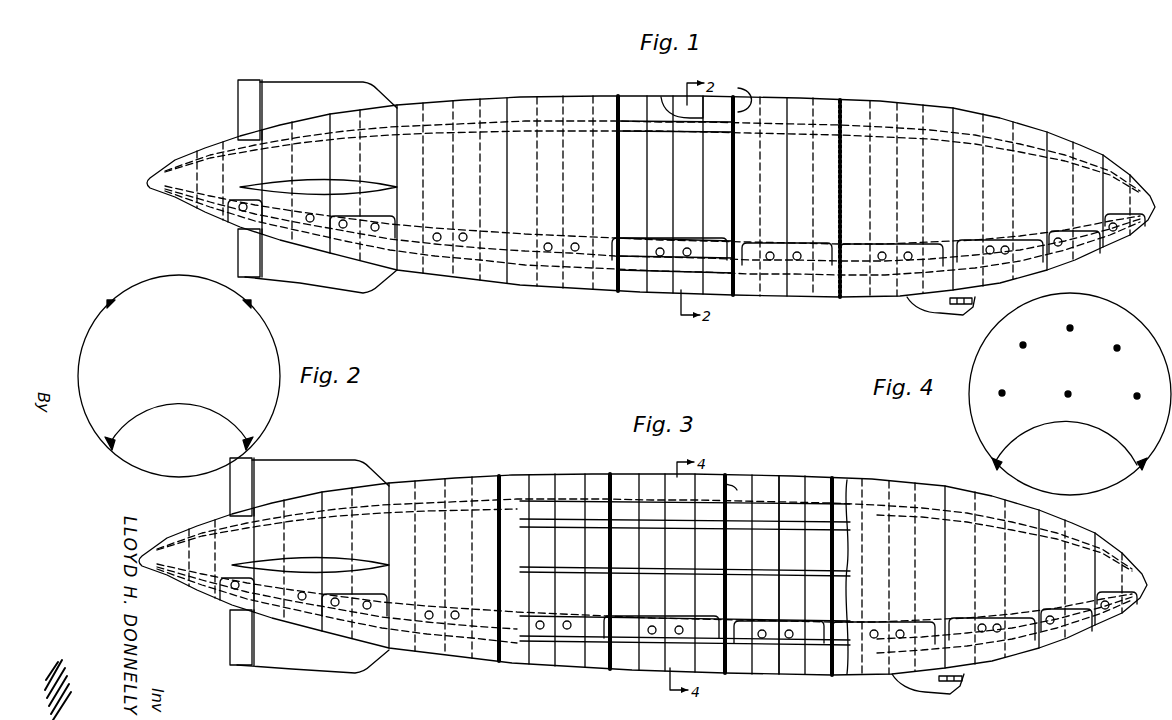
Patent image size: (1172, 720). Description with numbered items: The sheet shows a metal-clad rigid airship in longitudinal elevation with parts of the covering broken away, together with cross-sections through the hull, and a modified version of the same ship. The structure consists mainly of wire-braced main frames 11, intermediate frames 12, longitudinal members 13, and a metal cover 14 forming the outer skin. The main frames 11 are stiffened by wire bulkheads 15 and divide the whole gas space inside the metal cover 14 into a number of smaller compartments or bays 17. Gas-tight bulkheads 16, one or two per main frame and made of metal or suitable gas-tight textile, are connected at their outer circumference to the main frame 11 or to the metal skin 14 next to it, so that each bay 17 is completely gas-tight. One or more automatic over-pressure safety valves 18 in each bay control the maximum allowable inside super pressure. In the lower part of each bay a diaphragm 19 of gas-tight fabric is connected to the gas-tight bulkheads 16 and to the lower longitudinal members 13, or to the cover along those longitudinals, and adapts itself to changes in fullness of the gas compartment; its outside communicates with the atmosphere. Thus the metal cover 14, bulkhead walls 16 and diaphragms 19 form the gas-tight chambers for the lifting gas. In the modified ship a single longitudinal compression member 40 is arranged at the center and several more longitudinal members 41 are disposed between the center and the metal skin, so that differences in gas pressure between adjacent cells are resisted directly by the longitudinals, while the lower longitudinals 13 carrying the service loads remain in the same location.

In FIG. 1, the main frames 11 is at (507, 100).
In FIG. 3, the main frames 11 is at (498, 478).
In FIG. 1, the intermediate frames 12 is at (596, 98).
In FIG. 3, the intermediate frames 12 is at (583, 473).
In FIG. 1, the longitudinal members 13 is at (795, 120).
In FIG. 2, the longitudinal members 13 is at (113, 306).
In FIG. 4, the longitudinal members 13 is at (998, 463).
In FIG. 3, the longitudinal members 13 is at (790, 650).
In FIG. 1, the metal cover 14 is at (769, 99).
In FIG. 3, the metal cover 14 is at (768, 478).
In FIG. 1, the wire bulkheads 15 is at (623, 108).
In FIG. 3, the wire bulkheads 15 is at (833, 494).
In FIG. 1, the gas-tight bulkheads 16 is at (625, 108).
In FIG. 3, the gas-tight bulkheads 16 is at (728, 486).
In FIG. 1, the bays 17 is at (700, 197).
In FIG. 3, the bays 17 is at (685, 573).
In FIG. 1, the automatic over-pressure safety valves 18 is at (463, 233).
In FIG. 3, the automatic over-pressure safety valves 18 is at (675, 626).
In FIG. 1, the diaphragms 19 is at (710, 240).
In FIG. 2, the diaphragms 19 is at (210, 412).
In FIG. 4, the diaphragms 19 is at (1104, 429).
In FIG. 3, the diaphragms 19 is at (689, 621).
In FIG. 4, the longitudinal compression member 40 is at (1072, 396).
In FIG. 3, the longitudinal compression member 40 is at (657, 575).
In FIG. 4, the longitudinal members 41 is at (1026, 346).
In FIG. 3, the longitudinal members 41 is at (794, 502).